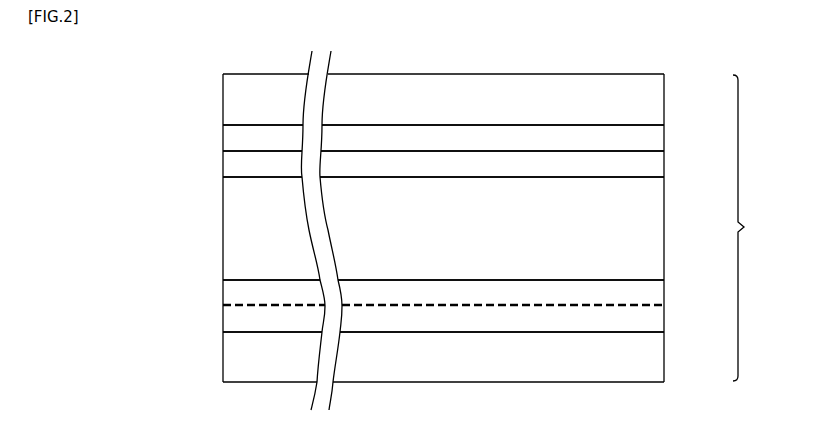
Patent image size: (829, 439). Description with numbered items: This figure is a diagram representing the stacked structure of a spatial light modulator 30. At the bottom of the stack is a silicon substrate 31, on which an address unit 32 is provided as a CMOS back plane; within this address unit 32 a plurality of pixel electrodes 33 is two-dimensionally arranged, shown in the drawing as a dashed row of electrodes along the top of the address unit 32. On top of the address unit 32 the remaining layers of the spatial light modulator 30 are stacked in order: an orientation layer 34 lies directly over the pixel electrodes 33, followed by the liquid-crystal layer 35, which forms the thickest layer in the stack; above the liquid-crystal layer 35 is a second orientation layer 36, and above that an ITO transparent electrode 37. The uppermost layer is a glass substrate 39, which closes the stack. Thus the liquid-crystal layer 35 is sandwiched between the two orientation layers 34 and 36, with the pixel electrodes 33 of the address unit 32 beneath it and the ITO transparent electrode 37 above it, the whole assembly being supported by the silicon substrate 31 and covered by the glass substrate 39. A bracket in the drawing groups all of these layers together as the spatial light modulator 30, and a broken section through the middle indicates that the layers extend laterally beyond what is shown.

The spatial light modulator 30 is at (756, 228).
The silicon substrate 31 is at (664, 370).
The address unit 32 is at (664, 318).
The pixel electrodes 33 is at (664, 305).
The orientation layer 34 is at (664, 284).
The liquid-crystal layer 35 is at (664, 215).
The orientation layer 36 is at (664, 170).
The ITO transparent electrode 37 is at (664, 138).
The glass substrate 39 is at (664, 100).